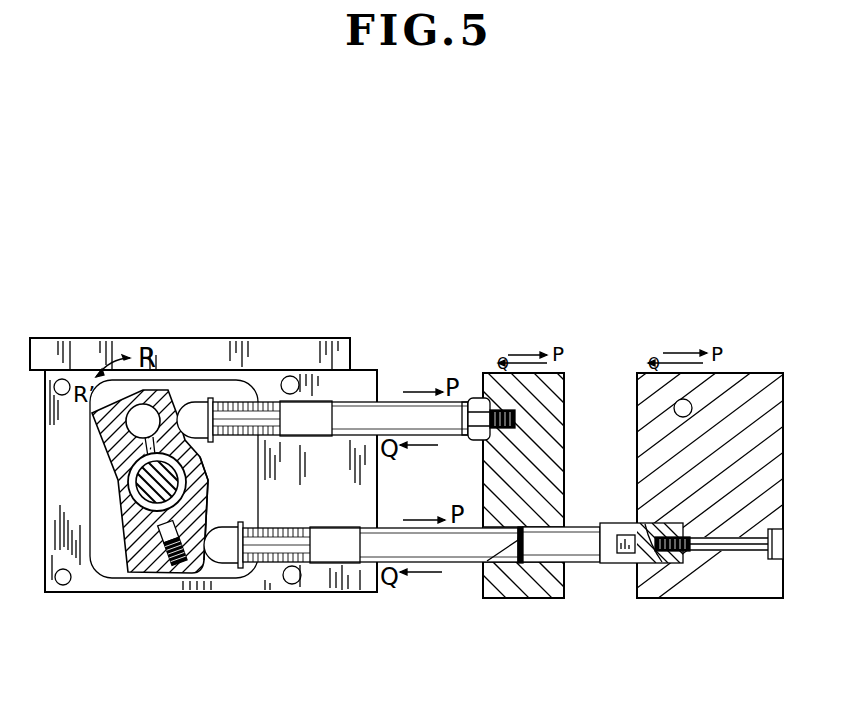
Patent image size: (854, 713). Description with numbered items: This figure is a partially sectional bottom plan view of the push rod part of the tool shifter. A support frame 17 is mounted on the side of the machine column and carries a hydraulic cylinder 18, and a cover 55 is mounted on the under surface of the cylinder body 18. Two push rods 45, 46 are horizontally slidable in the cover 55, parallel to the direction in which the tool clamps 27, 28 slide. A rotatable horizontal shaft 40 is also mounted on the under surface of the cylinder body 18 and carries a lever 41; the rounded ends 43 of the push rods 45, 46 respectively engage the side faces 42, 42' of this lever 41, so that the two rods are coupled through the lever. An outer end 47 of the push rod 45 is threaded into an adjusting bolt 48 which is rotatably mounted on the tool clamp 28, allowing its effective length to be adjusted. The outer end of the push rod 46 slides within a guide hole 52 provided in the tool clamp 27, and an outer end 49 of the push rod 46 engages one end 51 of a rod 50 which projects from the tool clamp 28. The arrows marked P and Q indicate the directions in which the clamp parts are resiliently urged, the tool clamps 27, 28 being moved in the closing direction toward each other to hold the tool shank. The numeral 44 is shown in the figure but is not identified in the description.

The support frame 17 is at (100, 358).
The hydraulic cylinder 18 is at (103, 560).
The tool clamp 27 is at (537, 457).
The tool clamp 28 is at (737, 407).
The rotatable horizontal shaft 40 is at (153, 493).
The lever 41 is at (153, 555).
The side face 42 is at (181, 335).
The side face 42' is at (281, 396).
The rounded end 43 is at (193, 410).
The rod head 44 is at (227, 555).
The push rod 45 is at (385, 413).
The push rod 46 is at (468, 547).
The outer end 47 is at (460, 400).
The adjusting bolt 48 is at (480, 398).
The outer end 49 is at (472, 565).
The rod 50 is at (600, 563).
The end 51 is at (540, 565).
The guide hole 52 is at (500, 570).
The cover 55 is at (275, 588).